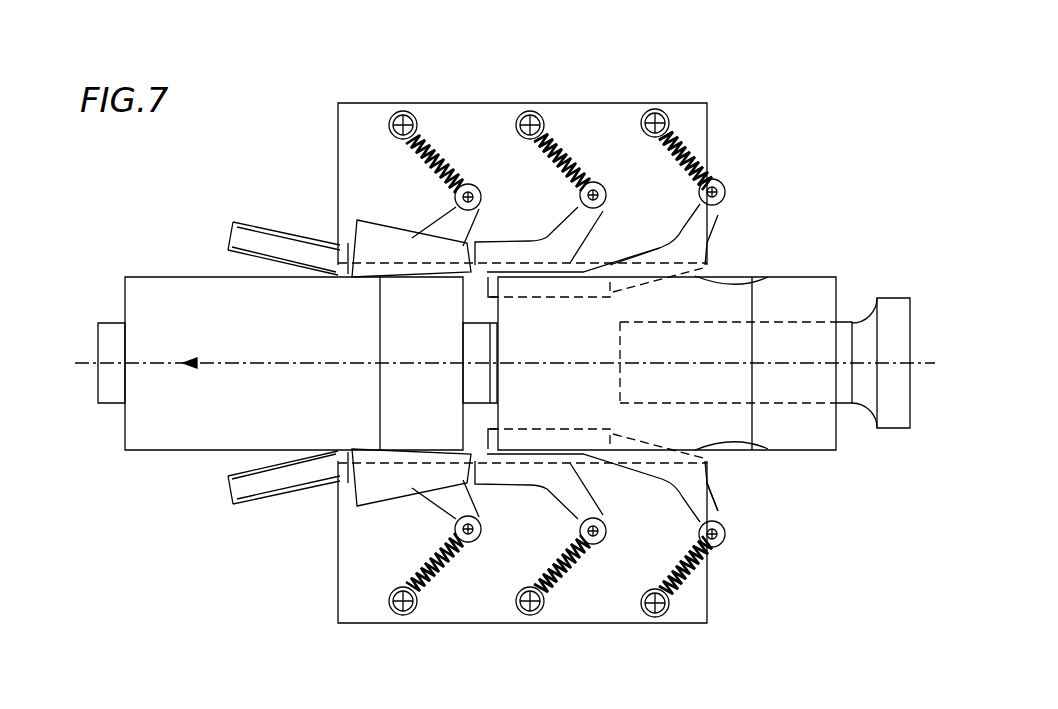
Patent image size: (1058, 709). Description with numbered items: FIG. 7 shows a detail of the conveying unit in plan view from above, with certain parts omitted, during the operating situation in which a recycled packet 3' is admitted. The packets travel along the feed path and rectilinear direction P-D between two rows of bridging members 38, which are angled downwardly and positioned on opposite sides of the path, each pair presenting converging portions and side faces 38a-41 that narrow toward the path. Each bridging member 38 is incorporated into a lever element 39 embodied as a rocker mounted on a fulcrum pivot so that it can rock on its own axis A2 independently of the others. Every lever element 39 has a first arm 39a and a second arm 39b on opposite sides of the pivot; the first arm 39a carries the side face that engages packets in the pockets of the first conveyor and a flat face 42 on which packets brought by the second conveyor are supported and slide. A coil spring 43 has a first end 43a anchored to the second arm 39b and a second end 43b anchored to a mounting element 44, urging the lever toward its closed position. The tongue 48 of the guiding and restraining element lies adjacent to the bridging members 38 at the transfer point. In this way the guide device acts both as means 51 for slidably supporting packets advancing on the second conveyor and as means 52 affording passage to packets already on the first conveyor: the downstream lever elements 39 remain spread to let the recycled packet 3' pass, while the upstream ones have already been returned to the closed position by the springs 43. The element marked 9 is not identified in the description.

The recycled packet 3' is at (484, 390).
The guide / neck portion 9 is at (466, 331).
The flat face 42 is at (246, 241).
The bridging member 38 is at (303, 231).
The lever element 39 is at (496, 235).
The first arm 39a is at (655, 248).
The second arm 39b is at (721, 217).
The coil spring 43 is at (436, 136).
The first end of coil spring 43a is at (716, 165).
The second end of coil spring 43b is at (681, 120).
The mounting element 44 is at (397, 111).
The tongue 48 is at (793, 337).
The means for slidably supporting packets 51 is at (708, 564).
The means affording passage of packets 52 is at (377, 510).
The converging portion and side face 38a-41 is at (768, 277).
The rocking axis A2 is at (447, 258).
The feed path and rectilinear direction P-D is at (152, 360).